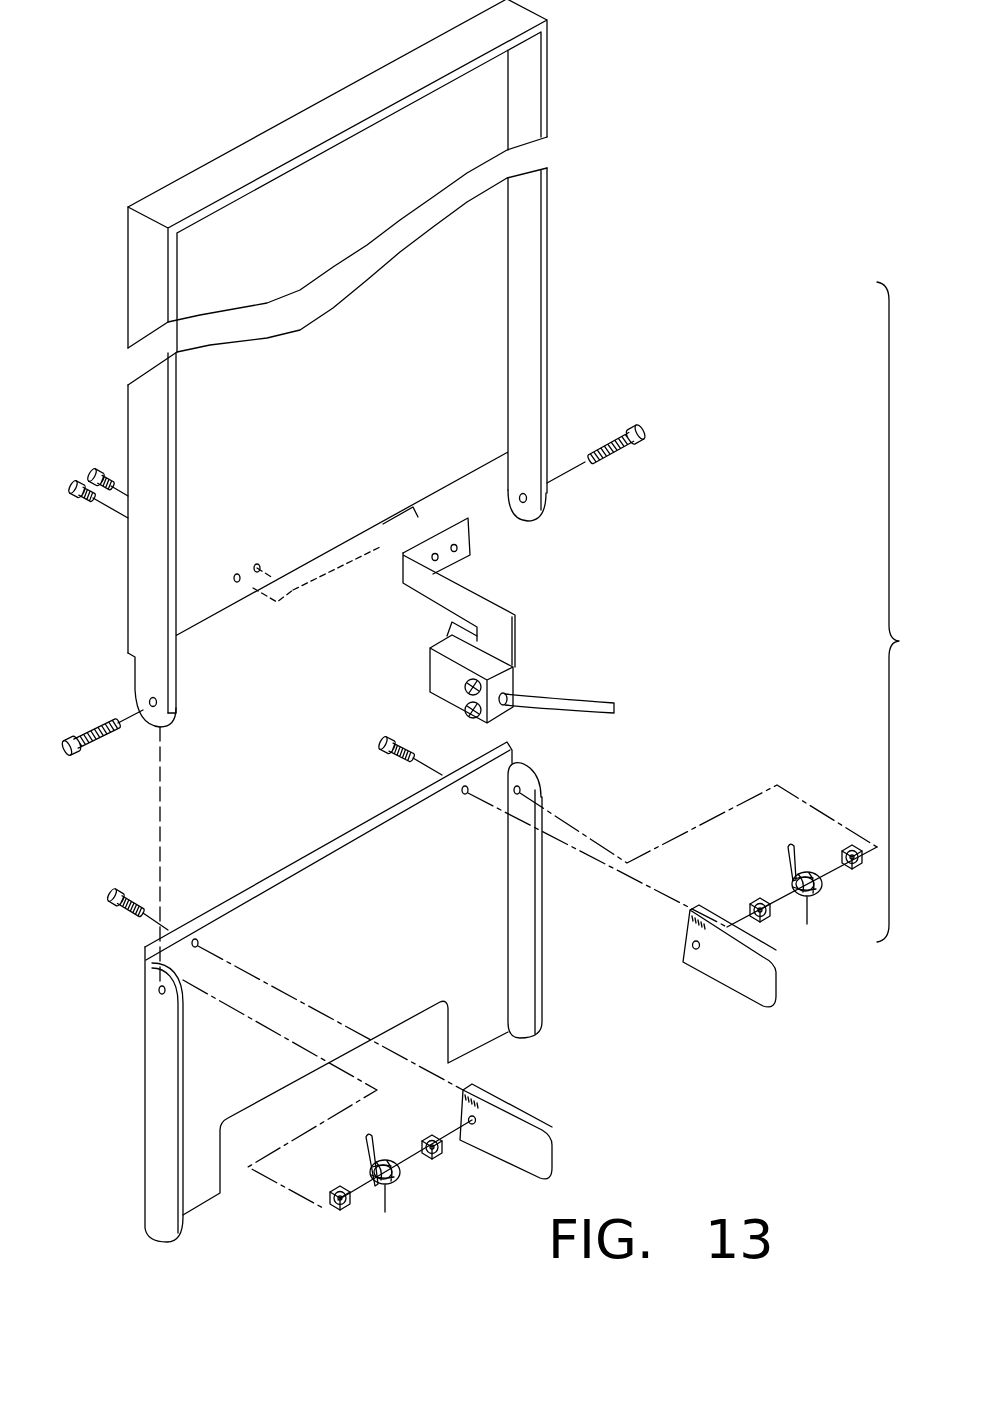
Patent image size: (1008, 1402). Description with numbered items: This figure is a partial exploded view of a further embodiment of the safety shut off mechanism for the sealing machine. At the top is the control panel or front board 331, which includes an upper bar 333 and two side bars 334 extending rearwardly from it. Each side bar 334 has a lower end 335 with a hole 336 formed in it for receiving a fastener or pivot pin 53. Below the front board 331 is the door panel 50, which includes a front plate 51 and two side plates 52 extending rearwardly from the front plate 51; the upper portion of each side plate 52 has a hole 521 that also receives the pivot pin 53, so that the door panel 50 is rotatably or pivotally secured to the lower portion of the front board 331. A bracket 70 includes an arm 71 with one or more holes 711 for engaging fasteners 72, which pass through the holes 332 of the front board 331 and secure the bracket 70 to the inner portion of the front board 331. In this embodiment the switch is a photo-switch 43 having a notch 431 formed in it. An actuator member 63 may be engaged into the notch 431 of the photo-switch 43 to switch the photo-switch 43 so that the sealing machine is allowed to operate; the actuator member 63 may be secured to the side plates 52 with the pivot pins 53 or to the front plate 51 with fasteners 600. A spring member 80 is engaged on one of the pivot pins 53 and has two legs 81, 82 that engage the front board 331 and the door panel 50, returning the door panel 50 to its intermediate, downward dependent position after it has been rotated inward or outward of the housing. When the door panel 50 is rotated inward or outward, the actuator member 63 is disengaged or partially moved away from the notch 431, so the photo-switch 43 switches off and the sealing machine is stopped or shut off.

The front board 331 is at (306, 106).
The upper bar 333 is at (225, 175).
The side bars 334 is at (530, 225).
The lower end 335 is at (528, 458).
The hole 336 is at (527, 499).
The holes 332 is at (237, 582).
The fasteners 72 is at (103, 473).
The pivot pin 53 is at (101, 762).
The bracket 70 is at (548, 593).
The arm 71 is at (468, 535).
The holes 711 is at (440, 560).
The photo-switch 43 is at (479, 667).
The notch 431 is at (430, 647).
The door panel 50 is at (363, 988).
The front plate 51 is at (313, 880).
The side plates 52 is at (518, 915).
The hole 521 is at (519, 790).
The fasteners 600 is at (123, 917).
The spring member 80 is at (401, 1183).
The leg 81 is at (388, 1190).
The leg 82 is at (377, 1203).
The actuator member 63 is at (502, 1128).